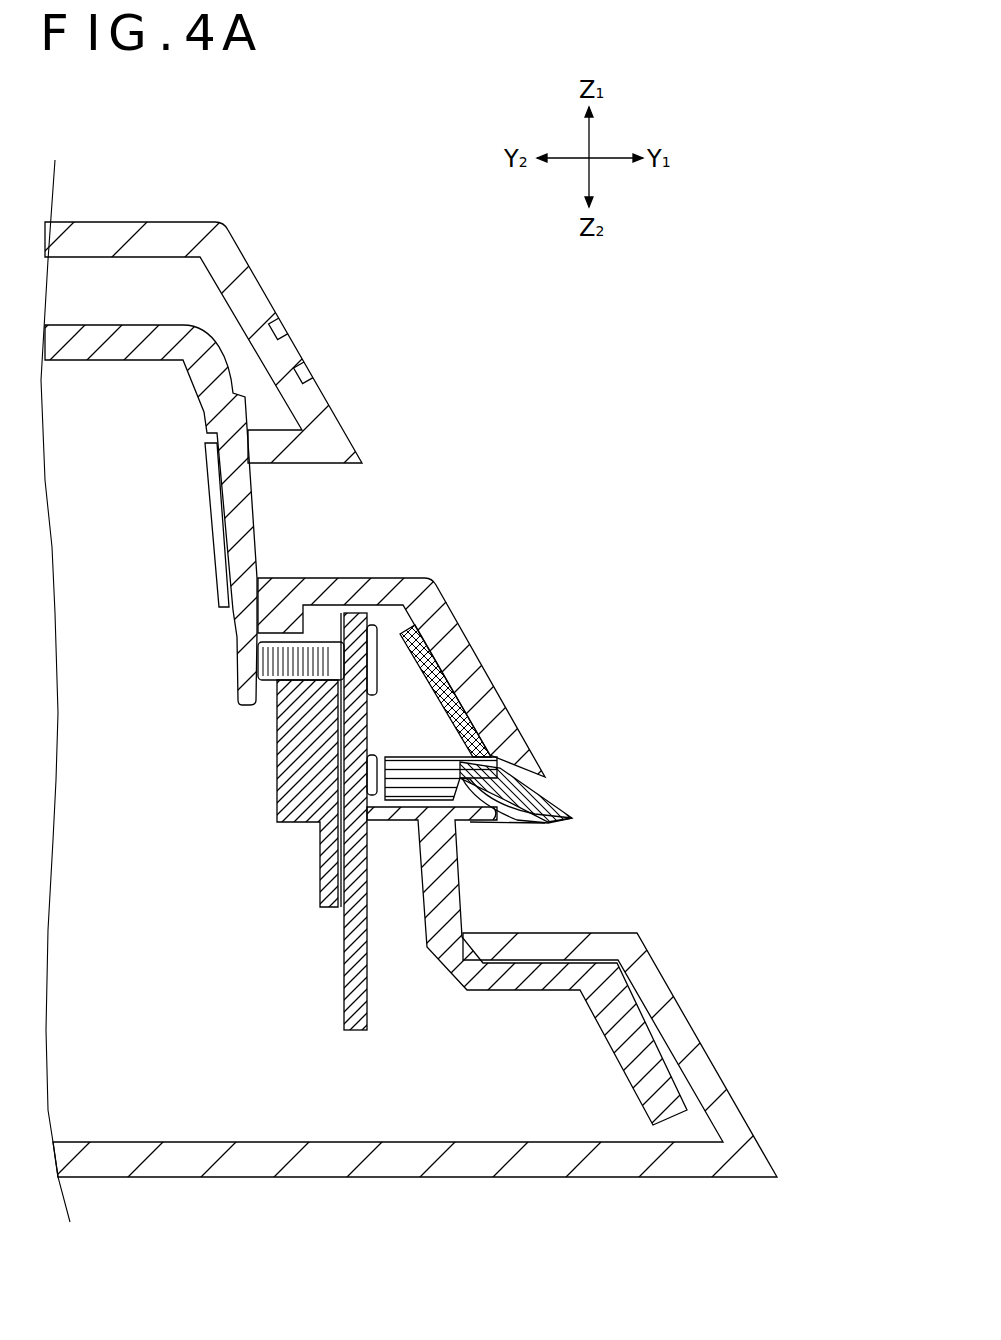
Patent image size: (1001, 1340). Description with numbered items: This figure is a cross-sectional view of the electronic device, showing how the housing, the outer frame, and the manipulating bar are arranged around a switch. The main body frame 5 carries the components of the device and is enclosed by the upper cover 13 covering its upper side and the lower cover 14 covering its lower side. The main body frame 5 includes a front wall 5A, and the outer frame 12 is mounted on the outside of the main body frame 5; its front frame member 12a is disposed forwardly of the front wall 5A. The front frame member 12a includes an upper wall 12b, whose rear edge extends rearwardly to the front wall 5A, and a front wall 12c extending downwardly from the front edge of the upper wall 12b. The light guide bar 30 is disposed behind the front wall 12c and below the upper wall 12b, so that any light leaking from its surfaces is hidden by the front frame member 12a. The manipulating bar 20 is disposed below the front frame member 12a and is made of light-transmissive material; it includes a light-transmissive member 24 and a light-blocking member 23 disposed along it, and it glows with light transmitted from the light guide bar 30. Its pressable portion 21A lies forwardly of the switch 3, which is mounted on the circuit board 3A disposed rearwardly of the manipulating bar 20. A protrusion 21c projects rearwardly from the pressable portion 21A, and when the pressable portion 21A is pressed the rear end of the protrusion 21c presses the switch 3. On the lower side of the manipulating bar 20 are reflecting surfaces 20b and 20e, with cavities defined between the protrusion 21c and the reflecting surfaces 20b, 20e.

The upper cover 13 is at (162, 237).
The main body frame 5 is at (240, 378).
The front wall 5A is at (240, 528).
The outer frame 12 is at (403, 629).
The front frame member 12a is at (403, 634).
The upper wall 12b is at (340, 588).
The front wall 12c is at (474, 667).
The light guide bar 30 is at (470, 700).
The switch 3 is at (360, 762).
The circuit board 3A is at (340, 922).
The protrusion 21c is at (413, 755).
The pressable portion 21A is at (551, 780).
The light-blocking member 23 is at (553, 793).
The light-transmissive member 24 is at (547, 823).
The manipulating bar 20 is at (532, 945).
The reflecting surface 20e is at (478, 818).
The reflecting surface 20b is at (517, 820).
The lower cover 14 is at (330, 1160).